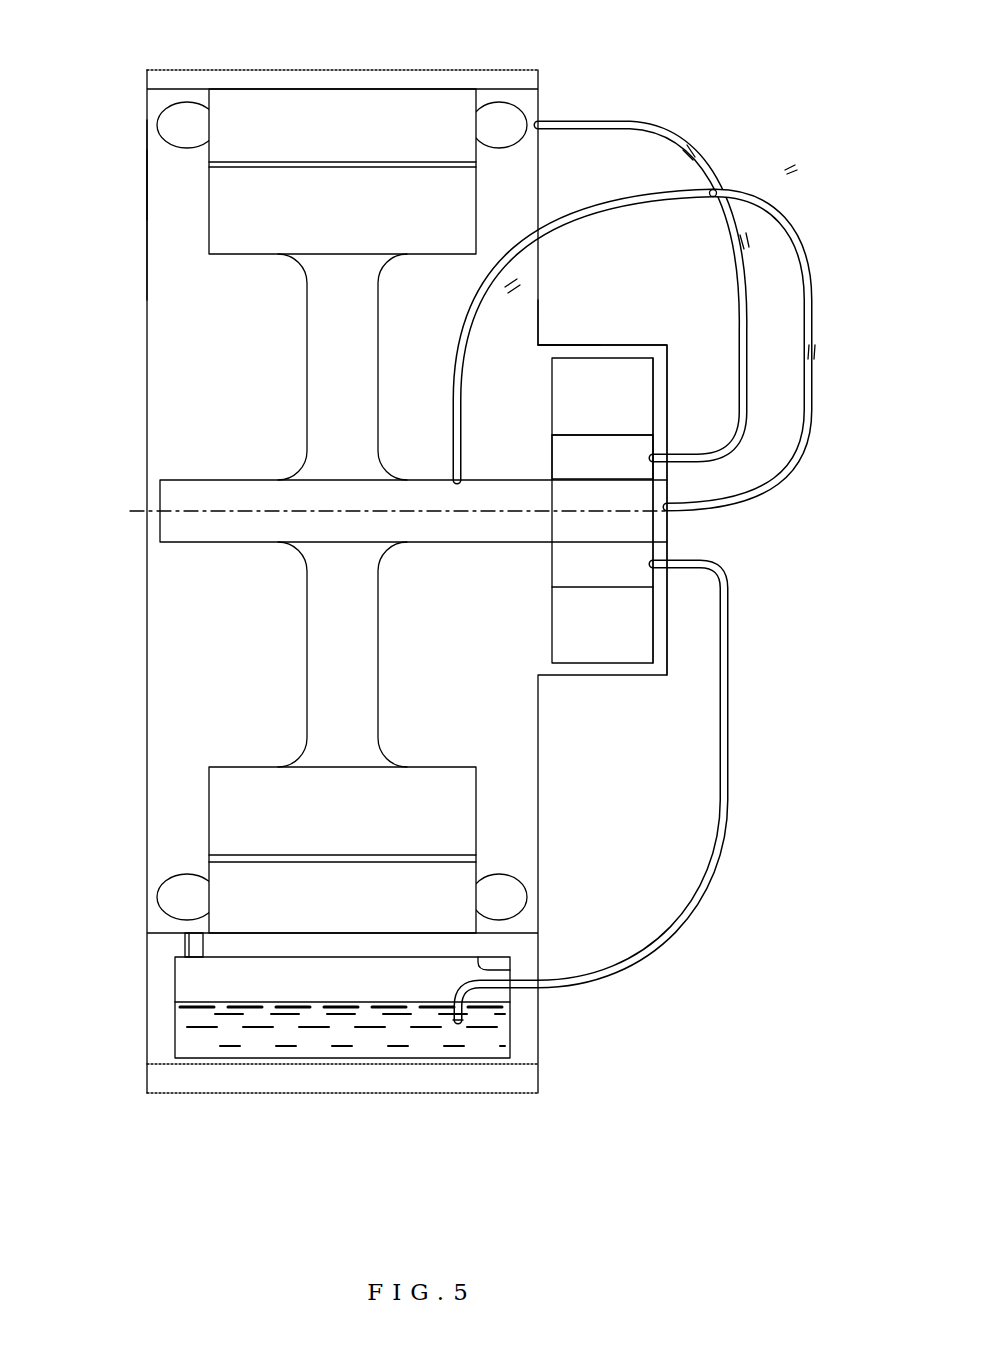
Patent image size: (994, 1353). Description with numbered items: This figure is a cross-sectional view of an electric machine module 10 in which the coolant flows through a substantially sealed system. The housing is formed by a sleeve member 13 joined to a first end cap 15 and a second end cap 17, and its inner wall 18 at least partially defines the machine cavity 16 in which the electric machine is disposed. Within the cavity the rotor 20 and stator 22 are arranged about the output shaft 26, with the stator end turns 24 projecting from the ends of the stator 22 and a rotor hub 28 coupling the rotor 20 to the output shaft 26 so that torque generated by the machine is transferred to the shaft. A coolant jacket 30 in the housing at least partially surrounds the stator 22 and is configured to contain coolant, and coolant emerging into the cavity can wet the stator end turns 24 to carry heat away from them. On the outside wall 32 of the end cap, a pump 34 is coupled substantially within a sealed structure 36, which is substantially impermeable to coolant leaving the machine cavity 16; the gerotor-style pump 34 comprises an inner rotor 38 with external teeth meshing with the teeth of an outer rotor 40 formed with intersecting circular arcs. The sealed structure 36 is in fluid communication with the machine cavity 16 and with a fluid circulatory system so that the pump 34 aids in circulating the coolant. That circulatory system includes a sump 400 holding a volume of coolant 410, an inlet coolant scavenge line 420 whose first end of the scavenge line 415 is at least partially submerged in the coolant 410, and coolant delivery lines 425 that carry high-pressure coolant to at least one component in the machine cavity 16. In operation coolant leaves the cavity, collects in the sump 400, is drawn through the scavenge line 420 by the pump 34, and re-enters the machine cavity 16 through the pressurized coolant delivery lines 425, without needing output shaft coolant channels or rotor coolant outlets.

The electric machine module 10 is at (576, 72).
The sleeve member 13 is at (510, 968).
The first end cap 15 is at (147, 225).
The machine cavity 16 is at (369, 510).
The second end cap 17 is at (538, 207).
The inner wall 18 is at (165, 180).
The rotor 20 is at (484, 200).
The stator 22 is at (280, 905).
The stator end turns 24 is at (186, 124).
The output shaft 26 is at (187, 480).
The rotor hub 28 is at (307, 368).
The coolant jacket 30 is at (240, 73).
The outside wall 32 is at (543, 300).
The pump 34 is at (655, 392).
The sealed structure 36 is at (636, 345).
The inner rotor 38 is at (633, 461).
The outer rotor 40 is at (667, 358).
The sump 400 is at (246, 1060).
The coolant 410 is at (205, 1036).
The first end of the scavenge line 415 is at (456, 1022).
The coolant scavenge line 420 is at (727, 840).
The coolant delivery lines 425 is at (670, 131).